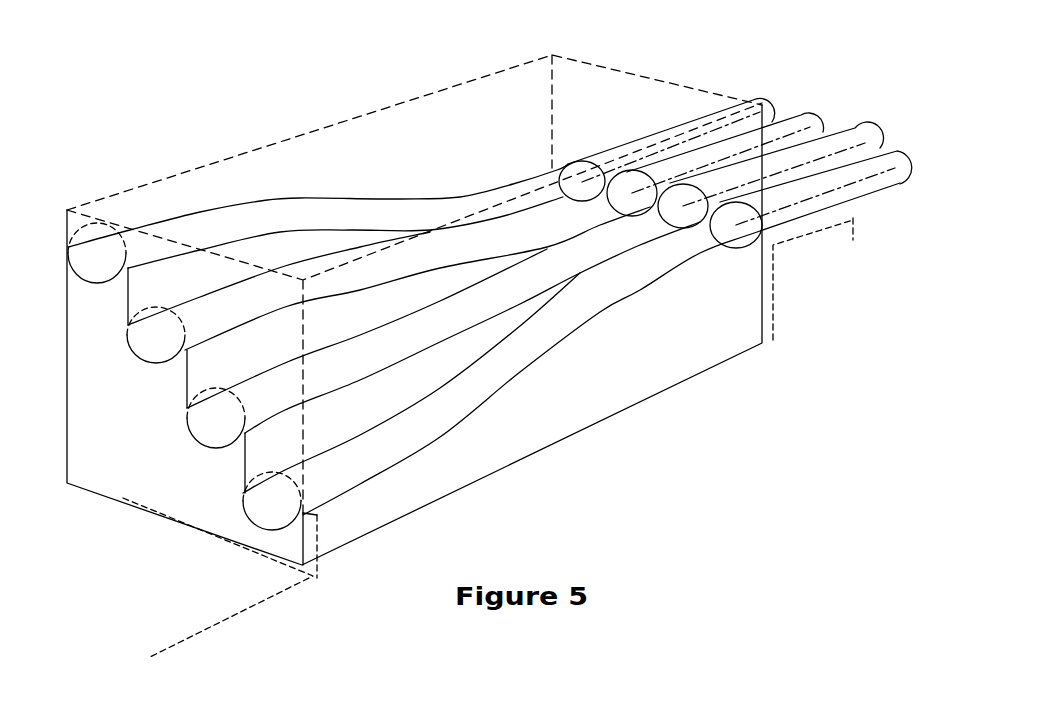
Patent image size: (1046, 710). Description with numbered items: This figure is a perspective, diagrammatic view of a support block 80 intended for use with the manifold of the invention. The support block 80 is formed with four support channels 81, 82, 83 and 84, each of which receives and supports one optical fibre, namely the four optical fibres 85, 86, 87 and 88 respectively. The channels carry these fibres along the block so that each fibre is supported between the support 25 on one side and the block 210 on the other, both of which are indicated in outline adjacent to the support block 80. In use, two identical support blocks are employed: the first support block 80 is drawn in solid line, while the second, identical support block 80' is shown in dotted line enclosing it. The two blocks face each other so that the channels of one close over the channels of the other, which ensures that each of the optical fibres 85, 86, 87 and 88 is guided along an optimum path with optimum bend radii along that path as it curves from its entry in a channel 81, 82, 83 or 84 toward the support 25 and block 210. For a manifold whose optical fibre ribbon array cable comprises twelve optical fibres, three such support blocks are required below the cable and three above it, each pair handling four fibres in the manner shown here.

The support block 80 is at (414, 335).
The support block 80' is at (414, 277).
The support channel 81 is at (92, 257).
The support channel 82 is at (153, 343).
The support channel 83 is at (207, 425).
The support channel 84 is at (273, 506).
The optical fibre 85 is at (772, 110).
The optical fibre 86 is at (817, 117).
The optical fibre 87 is at (877, 138).
The optical fibre 88 is at (898, 152).
The support 25 is at (813, 232).
The block 210 is at (268, 602).